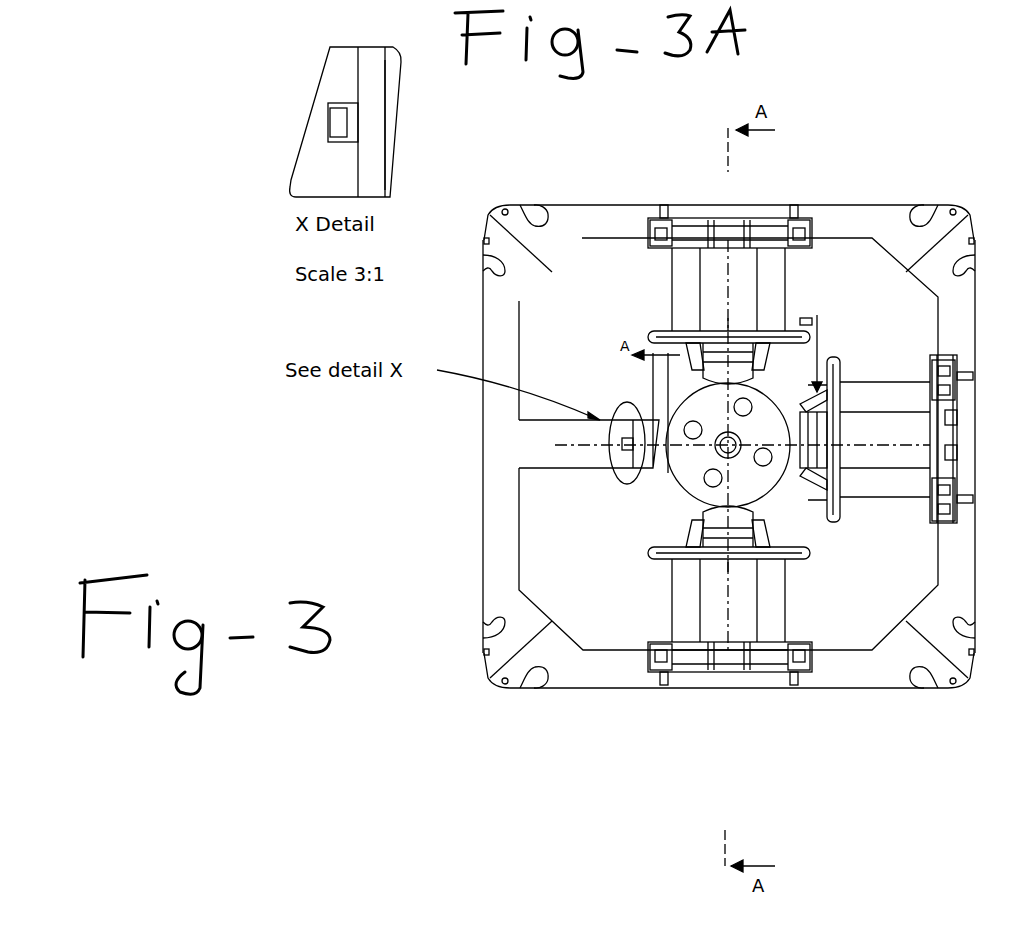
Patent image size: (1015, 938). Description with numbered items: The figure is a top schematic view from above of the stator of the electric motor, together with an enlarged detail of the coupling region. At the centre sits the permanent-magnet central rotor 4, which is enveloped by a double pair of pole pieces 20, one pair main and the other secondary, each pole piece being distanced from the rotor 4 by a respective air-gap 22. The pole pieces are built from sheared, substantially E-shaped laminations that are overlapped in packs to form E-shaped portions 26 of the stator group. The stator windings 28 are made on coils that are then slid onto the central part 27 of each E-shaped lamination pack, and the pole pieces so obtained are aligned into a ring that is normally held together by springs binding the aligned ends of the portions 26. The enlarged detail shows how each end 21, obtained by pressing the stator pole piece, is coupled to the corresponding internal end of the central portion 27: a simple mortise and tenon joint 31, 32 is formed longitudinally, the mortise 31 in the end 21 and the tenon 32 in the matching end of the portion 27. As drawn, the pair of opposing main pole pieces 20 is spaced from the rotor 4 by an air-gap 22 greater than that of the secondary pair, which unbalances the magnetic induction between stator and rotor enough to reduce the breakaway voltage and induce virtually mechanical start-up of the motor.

In FIG. 3, the permanent-magnet central rotor 4 is at (758, 477).
In FIG. 3, the pole pieces 20 is at (727, 383).
In FIG. 3, the ends of the stator pole pieces 21 is at (708, 512).
In FIG. 3A, the ends of the stator pole pieces 21 is at (388, 126).
In FIG. 3, the air-gaps 22 is at (800, 435).
In FIG. 3, the portions of the stator group 26 is at (504, 458).
In FIG. 3, the central part of the E-shaped lamination pack 27 is at (578, 453).
In FIG. 3A, the central part of the E-shaped lamination pack 27 is at (320, 192).
In FIG. 3, the stator windings 28 is at (887, 433).
In FIG. 3A, the mortise 31 is at (338, 105).
In FIG. 3A, the tenon 32 is at (348, 122).